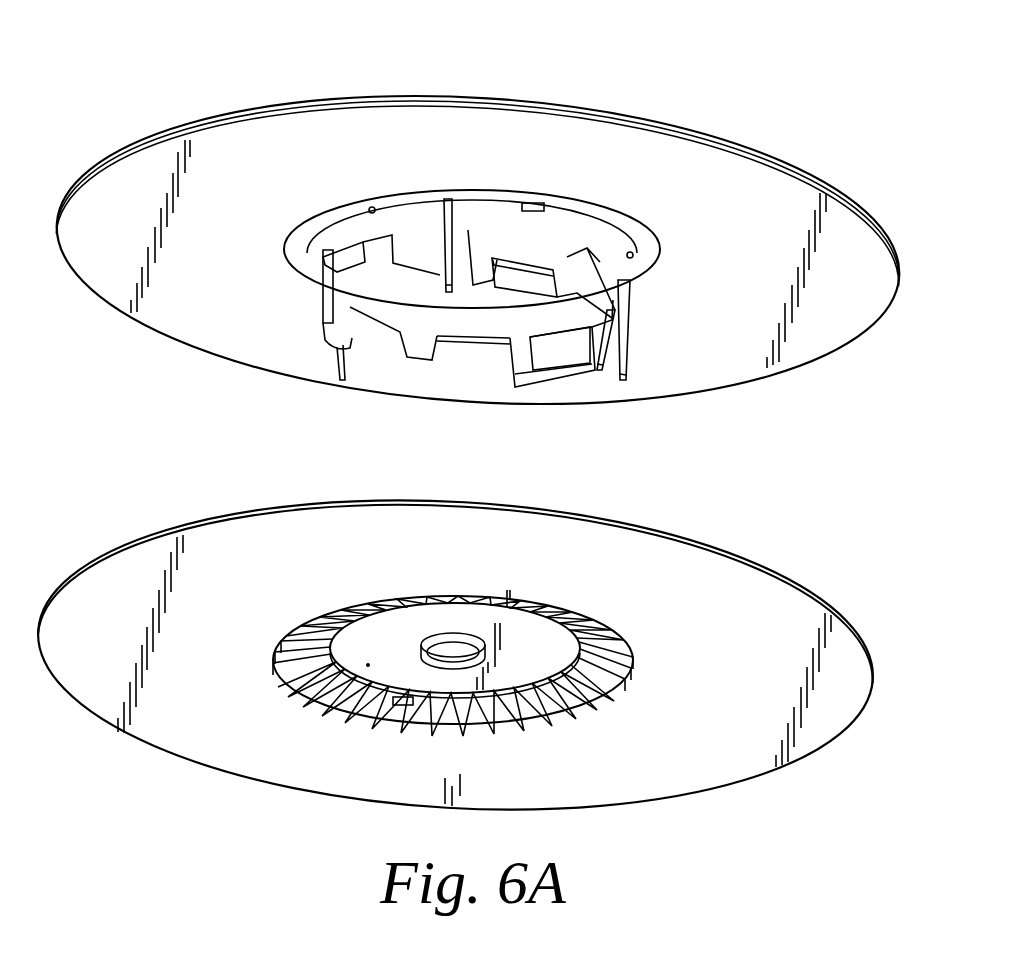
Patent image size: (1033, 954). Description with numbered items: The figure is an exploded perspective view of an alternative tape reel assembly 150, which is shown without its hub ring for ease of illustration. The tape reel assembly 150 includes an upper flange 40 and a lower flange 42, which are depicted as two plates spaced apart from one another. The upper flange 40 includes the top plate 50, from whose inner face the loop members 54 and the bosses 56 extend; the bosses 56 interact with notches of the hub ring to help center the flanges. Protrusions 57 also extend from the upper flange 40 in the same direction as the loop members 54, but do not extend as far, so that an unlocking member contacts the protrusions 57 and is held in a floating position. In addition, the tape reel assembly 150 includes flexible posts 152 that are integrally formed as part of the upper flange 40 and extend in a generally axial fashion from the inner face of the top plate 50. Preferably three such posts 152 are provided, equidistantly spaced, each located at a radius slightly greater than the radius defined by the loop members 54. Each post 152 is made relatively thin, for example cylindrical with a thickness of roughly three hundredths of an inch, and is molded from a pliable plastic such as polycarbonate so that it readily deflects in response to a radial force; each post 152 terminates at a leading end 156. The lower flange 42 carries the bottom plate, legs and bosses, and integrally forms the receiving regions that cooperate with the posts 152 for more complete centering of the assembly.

The tape reel assembly 150 is at (604, 66).
The upper flange 40 is at (736, 127).
The lower flange 42 is at (803, 574).
The top plate 50 is at (825, 328).
The loop members 54 is at (553, 245).
The bosses 56 is at (538, 203).
The protrusions 57 is at (650, 268).
The flexible posts 152 is at (452, 200).
The leading end 156 is at (448, 292).